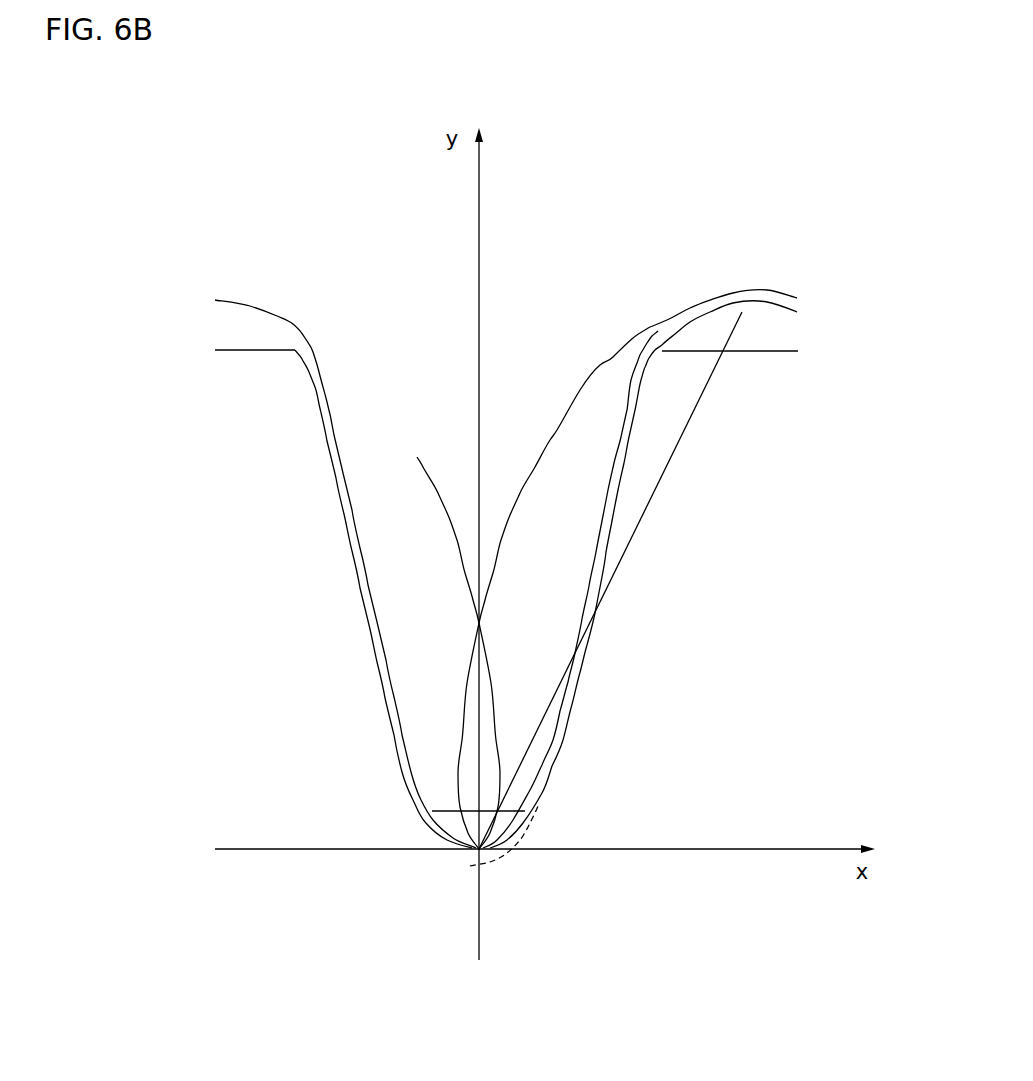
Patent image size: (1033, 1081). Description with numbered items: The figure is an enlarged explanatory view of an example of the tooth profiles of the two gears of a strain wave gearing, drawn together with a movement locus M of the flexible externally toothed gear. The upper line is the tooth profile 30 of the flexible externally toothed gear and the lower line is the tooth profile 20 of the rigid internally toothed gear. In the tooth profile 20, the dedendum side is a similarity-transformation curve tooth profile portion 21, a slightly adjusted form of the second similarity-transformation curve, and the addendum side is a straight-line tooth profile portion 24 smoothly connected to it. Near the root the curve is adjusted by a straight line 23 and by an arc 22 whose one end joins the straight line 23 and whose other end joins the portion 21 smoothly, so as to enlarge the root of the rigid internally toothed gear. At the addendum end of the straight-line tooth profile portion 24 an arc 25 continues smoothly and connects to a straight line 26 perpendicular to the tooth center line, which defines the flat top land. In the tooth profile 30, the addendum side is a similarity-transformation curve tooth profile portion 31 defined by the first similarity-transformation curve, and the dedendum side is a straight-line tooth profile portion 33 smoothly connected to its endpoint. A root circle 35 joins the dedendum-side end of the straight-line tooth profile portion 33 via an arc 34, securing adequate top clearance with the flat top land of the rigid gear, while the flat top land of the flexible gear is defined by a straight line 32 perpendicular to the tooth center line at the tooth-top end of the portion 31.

The tooth profile of rigid internally toothed gear 20 is at (638, 505).
The similarity-transformation curve tooth profile portion 21 is at (574, 755).
The arc 22 is at (517, 857).
The straight line 23 is at (470, 859).
The straight-line tooth profile portion 24 is at (637, 457).
The arc 25 is at (670, 364).
The straight line 26 is at (763, 365).
The tooth profile of flexible externally toothed gear 30 is at (612, 388).
The similarity-transformation curve tooth profile portion 31 is at (554, 707).
The straight line 32 is at (443, 792).
The straight-line tooth profile portion 33 is at (587, 551).
The arc 34 is at (635, 338).
The root circle 35 is at (719, 282).
The movement locus M is at (777, 276).